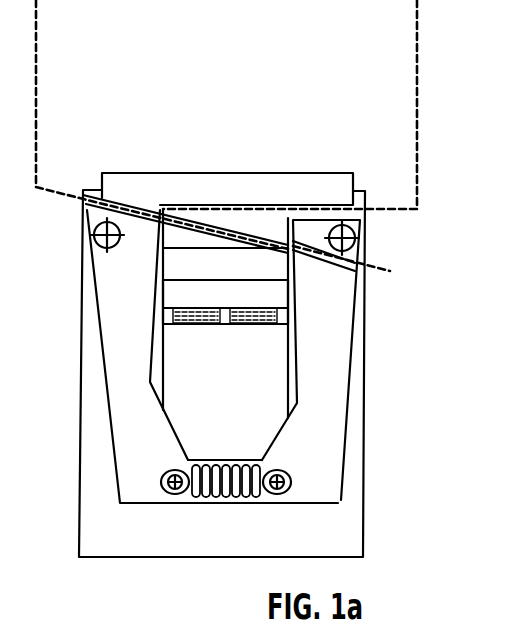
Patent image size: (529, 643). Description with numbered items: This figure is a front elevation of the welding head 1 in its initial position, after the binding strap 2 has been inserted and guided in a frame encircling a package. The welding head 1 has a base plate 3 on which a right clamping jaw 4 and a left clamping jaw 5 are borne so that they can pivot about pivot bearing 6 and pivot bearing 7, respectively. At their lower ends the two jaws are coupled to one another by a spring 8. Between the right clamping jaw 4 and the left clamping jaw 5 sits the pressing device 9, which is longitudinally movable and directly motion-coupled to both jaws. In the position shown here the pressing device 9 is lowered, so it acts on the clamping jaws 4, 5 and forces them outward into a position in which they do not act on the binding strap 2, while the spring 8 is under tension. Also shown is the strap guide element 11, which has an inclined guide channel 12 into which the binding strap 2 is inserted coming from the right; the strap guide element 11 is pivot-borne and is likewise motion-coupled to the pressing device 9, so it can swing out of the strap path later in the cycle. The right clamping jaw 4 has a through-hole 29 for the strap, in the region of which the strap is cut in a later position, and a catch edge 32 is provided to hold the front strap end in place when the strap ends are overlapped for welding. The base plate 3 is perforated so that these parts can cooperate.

The welding head 1 is at (63, 422).
The binding strap 2 is at (409, 46).
The base plate 3 is at (343, 532).
The right clamping jaw 4 is at (332, 373).
The left clamping jaw 5 is at (108, 347).
The pivot bearing 6 is at (356, 236).
The pivot bearing 7 is at (93, 237).
The spring 8 is at (217, 497).
The pressing device 9 is at (257, 435).
The strap guide element 11 is at (257, 223).
The inclined guide channel 12 is at (214, 223).
The through-hole 29 is at (340, 268).
The catch edge 32 is at (162, 206).